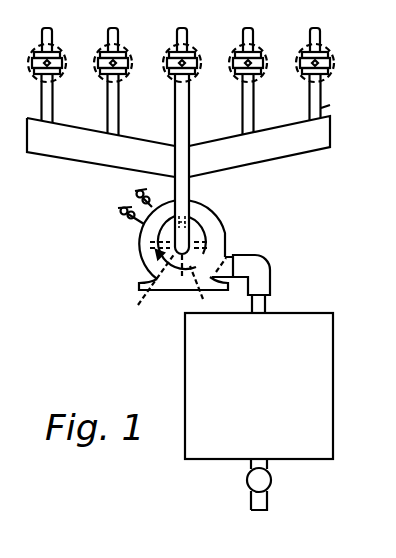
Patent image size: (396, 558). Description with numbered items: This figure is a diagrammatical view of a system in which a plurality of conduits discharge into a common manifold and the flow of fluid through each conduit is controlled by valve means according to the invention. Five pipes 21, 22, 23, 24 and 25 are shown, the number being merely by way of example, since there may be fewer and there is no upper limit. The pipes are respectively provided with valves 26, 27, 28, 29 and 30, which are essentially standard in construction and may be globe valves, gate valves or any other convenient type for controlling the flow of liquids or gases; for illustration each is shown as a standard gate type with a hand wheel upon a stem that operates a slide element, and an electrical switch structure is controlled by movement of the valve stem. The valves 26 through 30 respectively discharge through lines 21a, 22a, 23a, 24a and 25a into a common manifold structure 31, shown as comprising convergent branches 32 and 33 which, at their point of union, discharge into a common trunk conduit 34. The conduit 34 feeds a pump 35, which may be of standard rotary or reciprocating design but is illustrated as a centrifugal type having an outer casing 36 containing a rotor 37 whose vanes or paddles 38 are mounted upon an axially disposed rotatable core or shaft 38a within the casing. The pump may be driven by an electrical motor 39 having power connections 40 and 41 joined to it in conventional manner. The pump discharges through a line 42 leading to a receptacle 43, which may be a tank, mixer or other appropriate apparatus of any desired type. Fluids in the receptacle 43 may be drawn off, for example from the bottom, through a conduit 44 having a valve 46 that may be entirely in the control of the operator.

The pipe 21 is at (52, 34).
The pipe 22 is at (118, 34).
The pipe 23 is at (187, 34).
The pipe 24 is at (253, 34).
The pipe 25 is at (320, 34).
The valve 26 is at (58, 76).
The valve 27 is at (124, 76).
The valve 28 is at (193, 76).
The valve 29 is at (259, 76).
The valve 30 is at (326, 76).
The line 21a is at (53, 108).
The line 22a is at (119, 108).
The line 23a is at (190, 108).
The line 24a is at (254, 108).
The line 25a is at (336, 97).
The common manifold structure 31 is at (202, 149).
The convergent branch 32 is at (303, 157).
The convergent branch 33 is at (82, 160).
The common trunk conduit 34 is at (191, 205).
The pump 35 is at (229, 233).
The outer casing 36 is at (146, 241).
The rotor 37 is at (145, 263).
The vanes or paddles 38 is at (204, 285).
The rotatable core or shaft 38a is at (137, 284).
The electrical motor 39 is at (215, 215).
The power connection 40 is at (150, 191).
The power connection 41 is at (118, 210).
The line 42 is at (267, 301).
The receptacle 43 is at (333, 336).
The conduit 44 is at (268, 463).
The valve 46 is at (247, 485).